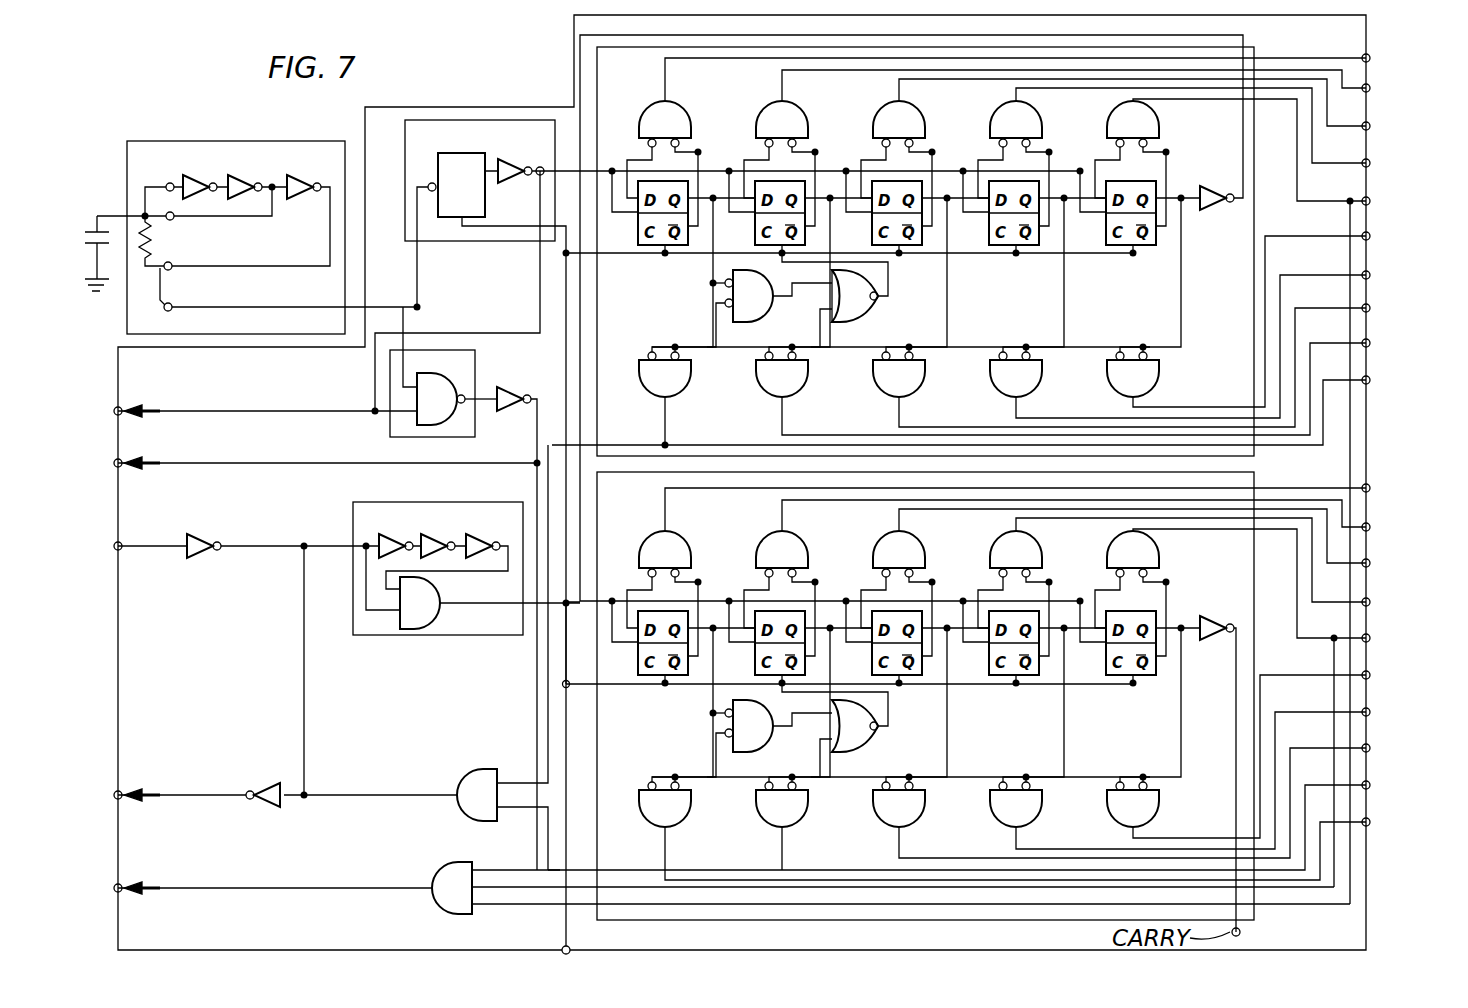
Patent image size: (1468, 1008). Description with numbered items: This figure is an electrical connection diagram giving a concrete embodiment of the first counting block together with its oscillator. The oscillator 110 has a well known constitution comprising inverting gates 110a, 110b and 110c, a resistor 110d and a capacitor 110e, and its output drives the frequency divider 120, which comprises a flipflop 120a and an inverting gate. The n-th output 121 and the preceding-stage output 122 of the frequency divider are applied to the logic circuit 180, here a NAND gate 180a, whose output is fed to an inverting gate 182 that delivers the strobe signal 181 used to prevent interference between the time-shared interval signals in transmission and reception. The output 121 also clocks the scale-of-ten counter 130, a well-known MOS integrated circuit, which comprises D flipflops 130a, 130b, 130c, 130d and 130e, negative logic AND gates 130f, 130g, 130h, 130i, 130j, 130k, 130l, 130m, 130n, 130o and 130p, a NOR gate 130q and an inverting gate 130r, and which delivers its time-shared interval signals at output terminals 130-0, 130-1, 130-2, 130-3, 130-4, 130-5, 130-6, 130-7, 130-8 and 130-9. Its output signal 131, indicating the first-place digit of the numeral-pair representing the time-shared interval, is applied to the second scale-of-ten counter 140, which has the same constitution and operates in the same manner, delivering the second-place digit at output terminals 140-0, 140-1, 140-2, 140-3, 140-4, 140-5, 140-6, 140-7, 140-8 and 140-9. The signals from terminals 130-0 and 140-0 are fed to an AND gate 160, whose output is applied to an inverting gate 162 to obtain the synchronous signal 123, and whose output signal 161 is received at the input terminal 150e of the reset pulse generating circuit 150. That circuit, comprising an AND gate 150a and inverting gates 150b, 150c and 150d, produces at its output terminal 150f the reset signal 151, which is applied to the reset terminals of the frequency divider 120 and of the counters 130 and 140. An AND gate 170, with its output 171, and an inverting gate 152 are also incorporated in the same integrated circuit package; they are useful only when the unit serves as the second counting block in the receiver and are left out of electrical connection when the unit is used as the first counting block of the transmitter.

The oscillator 110 is at (190, 137).
The inverting gate 110a is at (194, 178).
The inverting gate 110b is at (250, 178).
The inverting gate 110c is at (302, 196).
The resistor 110d is at (150, 240).
The capacitor 110e is at (90, 225).
The frequency divider circuit 120 is at (468, 248).
The flipflop 120a is at (482, 150).
The n-th output 121 is at (542, 153).
The (n-1)th output 122 is at (148, 408).
The synchronous signal 123 is at (148, 790).
The scale-of-10 counter 130 is at (1240, 459).
The D flipflop 130a is at (628, 250).
The D flipflop 130b is at (766, 254).
The D flipflop 130c is at (894, 252).
The D flipflop 130d is at (986, 252).
The D flipflop 130e is at (1136, 252).
The negative logic AND gate 130f is at (688, 98).
The negative logic AND gate 130g is at (808, 98).
The negative logic AND gate 130h is at (925, 98).
The negative logic AND gate 130i is at (1043, 98).
The negative logic AND gate 130j is at (1160, 108).
The negative logic AND gate 130k is at (696, 368).
The negative logic AND gate 130l is at (813, 368).
The negative logic AND gate 130m is at (930, 368).
The negative logic AND gate 130n is at (1047, 368).
The negative logic AND gate 130o is at (1164, 373).
The negative logic AND gate 130p is at (728, 292).
The NOR gate 130q is at (860, 302).
The inverting gate 130r is at (1213, 190).
The output terminal 130-0 is at (998, 406).
The output terminal 130-1 is at (1113, 86).
The output terminal 130-2 is at (1172, 359).
The output terminal 130-3 is at (1230, 130).
The output terminal 130-4 is at (1289, 313).
The output terminal 130-5 is at (1055, 71).
The output terminal 130-6 is at (1113, 380).
The output terminal 130-7 is at (1172, 107).
The output terminal 130-8 is at (1230, 338).
The output terminal 130-9 is at (1289, 501).
The output signal 131 is at (1248, 32).
The scale-of-10 counter 140 is at (1250, 904).
The output terminal 140-0 is at (1055, 842).
The output terminal 140-1 is at (1113, 518).
The output terminal 140-2 is at (1172, 794).
The output terminal 140-3 is at (1230, 564).
The output terminal 140-4 is at (1289, 748).
The output terminal 140-5 is at (1055, 501).
The output terminal 140-6 is at (996, 819).
The output terminal 140-7 is at (1172, 540).
The output terminal 140-8 is at (1230, 772).
The output terminal 140-9 is at (1289, 708).
The reset pulse generating circuit 150 is at (404, 636).
The AND gate 150a is at (446, 582).
The inverting gate 150b is at (396, 540).
The inverting gate 150c is at (440, 531).
The inverting gate 150d is at (484, 540).
The input terminal 150e is at (318, 530).
The output terminal 150f is at (508, 606).
The reset signal 151 is at (560, 612).
The inverting gate 152 is at (211, 542).
The AND gate 160 is at (472, 778).
The output signal 161 is at (340, 790).
The inverting gate 162 is at (266, 782).
The AND gate 170 is at (454, 868).
The output line 171 is at (148, 882).
The logic circuit 180 is at (476, 426).
The NAND gate 180a is at (444, 378).
The strobe signal 181 is at (148, 460).
The inverting gate 182 is at (516, 388).